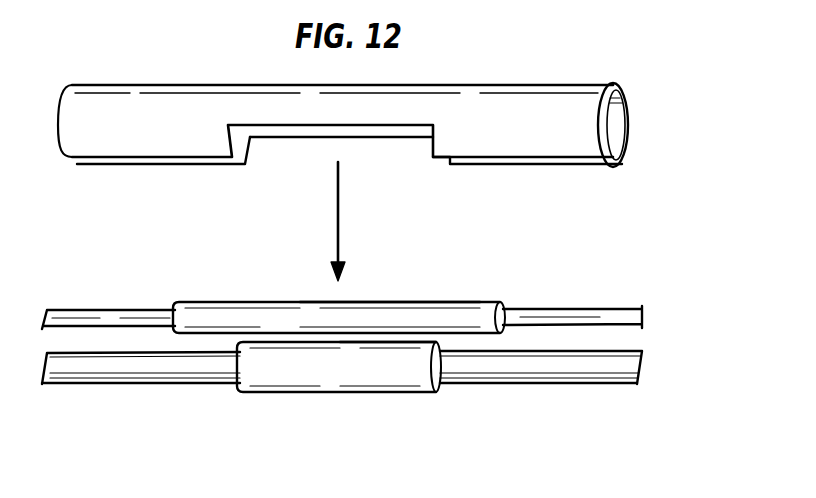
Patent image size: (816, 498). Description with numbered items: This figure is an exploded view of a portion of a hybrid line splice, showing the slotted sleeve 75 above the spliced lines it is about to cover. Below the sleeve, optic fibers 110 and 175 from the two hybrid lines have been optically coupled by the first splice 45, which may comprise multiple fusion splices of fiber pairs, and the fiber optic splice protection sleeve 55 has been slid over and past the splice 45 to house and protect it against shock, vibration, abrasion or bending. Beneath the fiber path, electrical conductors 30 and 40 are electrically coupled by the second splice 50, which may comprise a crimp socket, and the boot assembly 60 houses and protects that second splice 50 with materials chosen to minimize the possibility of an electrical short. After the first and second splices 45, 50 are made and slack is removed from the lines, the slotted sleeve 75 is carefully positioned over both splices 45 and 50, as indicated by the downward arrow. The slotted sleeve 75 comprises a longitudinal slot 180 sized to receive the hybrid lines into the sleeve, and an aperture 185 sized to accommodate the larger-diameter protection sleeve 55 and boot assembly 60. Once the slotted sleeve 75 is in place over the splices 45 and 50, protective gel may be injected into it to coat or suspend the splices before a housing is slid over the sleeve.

The slotted sleeve 75 is at (648, 99).
The longitudinal slot 180 is at (165, 170).
The aperture 185 is at (298, 170).
The optic fibers 110 is at (110, 312).
The optic fibers 175 is at (560, 308).
The fiber optic splice protection sleeve 55 is at (228, 304).
The first splice 45 is at (396, 291).
The electrical conductor 30 is at (125, 383).
The electrical conductor 40 is at (560, 382).
The second splice 50 is at (266, 405).
The boot assembly 60 is at (405, 404).